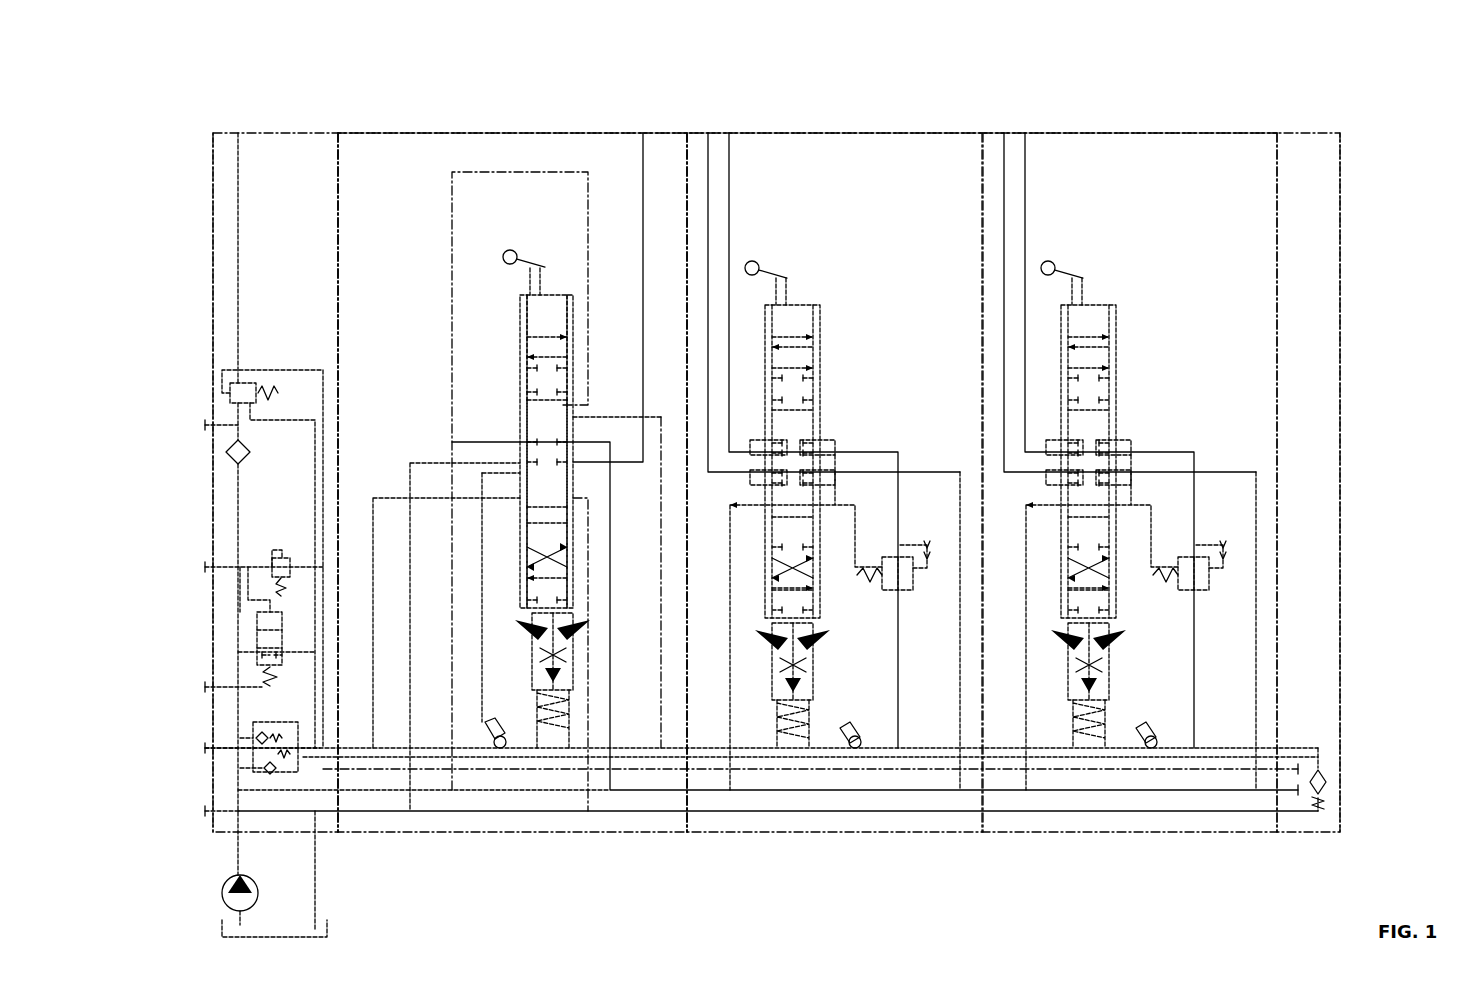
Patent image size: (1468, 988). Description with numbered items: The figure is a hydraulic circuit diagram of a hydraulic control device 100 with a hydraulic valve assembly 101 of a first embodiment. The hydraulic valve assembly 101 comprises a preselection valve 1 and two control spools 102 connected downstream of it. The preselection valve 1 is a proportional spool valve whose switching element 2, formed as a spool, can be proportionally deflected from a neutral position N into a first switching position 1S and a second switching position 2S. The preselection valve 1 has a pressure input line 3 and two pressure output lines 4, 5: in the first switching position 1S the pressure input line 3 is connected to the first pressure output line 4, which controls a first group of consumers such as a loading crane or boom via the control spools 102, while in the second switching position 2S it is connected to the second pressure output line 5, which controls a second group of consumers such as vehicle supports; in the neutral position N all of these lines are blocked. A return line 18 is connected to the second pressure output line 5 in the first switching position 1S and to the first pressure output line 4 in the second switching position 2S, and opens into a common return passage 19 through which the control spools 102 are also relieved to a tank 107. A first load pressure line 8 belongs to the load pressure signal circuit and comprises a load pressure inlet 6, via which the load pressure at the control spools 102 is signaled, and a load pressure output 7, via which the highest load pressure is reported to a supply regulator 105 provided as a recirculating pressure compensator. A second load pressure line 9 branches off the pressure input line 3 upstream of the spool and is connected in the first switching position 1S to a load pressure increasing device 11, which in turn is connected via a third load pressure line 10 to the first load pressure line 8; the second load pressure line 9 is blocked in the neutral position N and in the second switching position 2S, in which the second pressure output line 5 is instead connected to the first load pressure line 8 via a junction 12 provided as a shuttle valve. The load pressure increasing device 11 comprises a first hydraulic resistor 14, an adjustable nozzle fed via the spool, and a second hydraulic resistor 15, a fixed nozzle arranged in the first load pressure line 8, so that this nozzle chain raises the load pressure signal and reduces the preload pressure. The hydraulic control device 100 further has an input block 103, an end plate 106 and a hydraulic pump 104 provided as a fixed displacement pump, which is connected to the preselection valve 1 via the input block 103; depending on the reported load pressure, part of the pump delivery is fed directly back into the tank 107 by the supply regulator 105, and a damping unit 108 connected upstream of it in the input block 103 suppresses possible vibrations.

The hydraulic control device 100 is at (178, 282).
The hydraulic valve assembly 101 is at (540, 88).
The control spools 102 is at (803, 128).
The input block 103 is at (303, 128).
The hydraulic pump 104 is at (224, 896).
The supply regulator 105 is at (278, 662).
The end plate 106 is at (1312, 128).
The tank 107 is at (282, 920).
The damping unit 108 is at (252, 735).
The preselection valve 1 is at (425, 128).
The switching element 2 is at (518, 390).
The pressure input line 3 is at (452, 530).
The first pressure output line 4 is at (612, 520).
The second pressure output line 5 is at (645, 372).
The load pressure inlet 6 is at (690, 745).
The load pressure output 7 is at (340, 747).
The first load pressure line 8 is at (625, 746).
The second load pressure line 9 is at (450, 226).
The third load pressure line 10 is at (661, 598).
The load pressure increasing device 11 is at (628, 292).
The junction 12 is at (495, 722).
The first hydraulic resistor 14 is at (600, 410).
The second hydraulic resistor 15 is at (678, 748).
The return line 18 is at (422, 461).
The common return passage 19 is at (460, 814).
The first switching position 1S is at (533, 318).
The second switching position 2S is at (545, 540).
The neutral position N is at (535, 430).